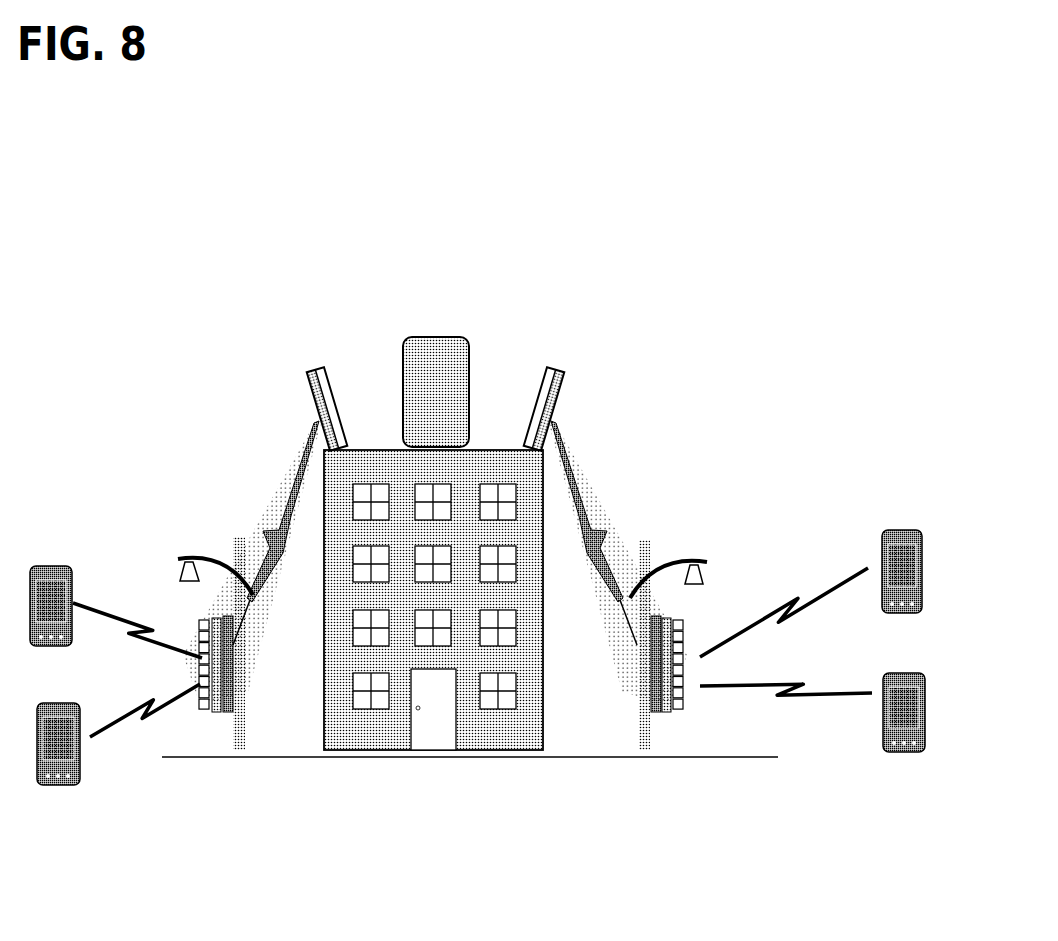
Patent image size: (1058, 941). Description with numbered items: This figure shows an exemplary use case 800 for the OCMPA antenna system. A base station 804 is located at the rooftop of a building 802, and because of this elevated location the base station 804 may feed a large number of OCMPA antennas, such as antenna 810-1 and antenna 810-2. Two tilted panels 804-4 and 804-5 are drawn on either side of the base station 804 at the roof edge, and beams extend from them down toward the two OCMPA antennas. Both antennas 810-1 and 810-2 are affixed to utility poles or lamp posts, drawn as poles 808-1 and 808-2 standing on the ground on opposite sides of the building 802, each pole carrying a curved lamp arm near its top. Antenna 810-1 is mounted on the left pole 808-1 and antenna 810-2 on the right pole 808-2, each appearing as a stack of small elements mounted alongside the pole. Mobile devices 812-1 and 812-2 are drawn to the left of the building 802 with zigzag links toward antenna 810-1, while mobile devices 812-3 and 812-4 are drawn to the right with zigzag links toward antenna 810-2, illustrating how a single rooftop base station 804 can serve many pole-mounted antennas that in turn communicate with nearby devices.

The wireless communication environment 800 is at (801, 193).
The building 802 is at (497, 732).
The base station 804 is at (443, 375).
The antenna panel 804-4 is at (322, 368).
The antenna panel 804-5 is at (548, 368).
The light pole 808-1 is at (240, 740).
The light pole 808-2 is at (645, 740).
The antenna 810-1 is at (217, 712).
The antenna 810-2 is at (670, 714).
The mobile device 812-1 is at (78, 674).
The mobile device 812-2 is at (83, 812).
The mobile device 812-3 is at (928, 639).
The mobile device 812-4 is at (933, 777).